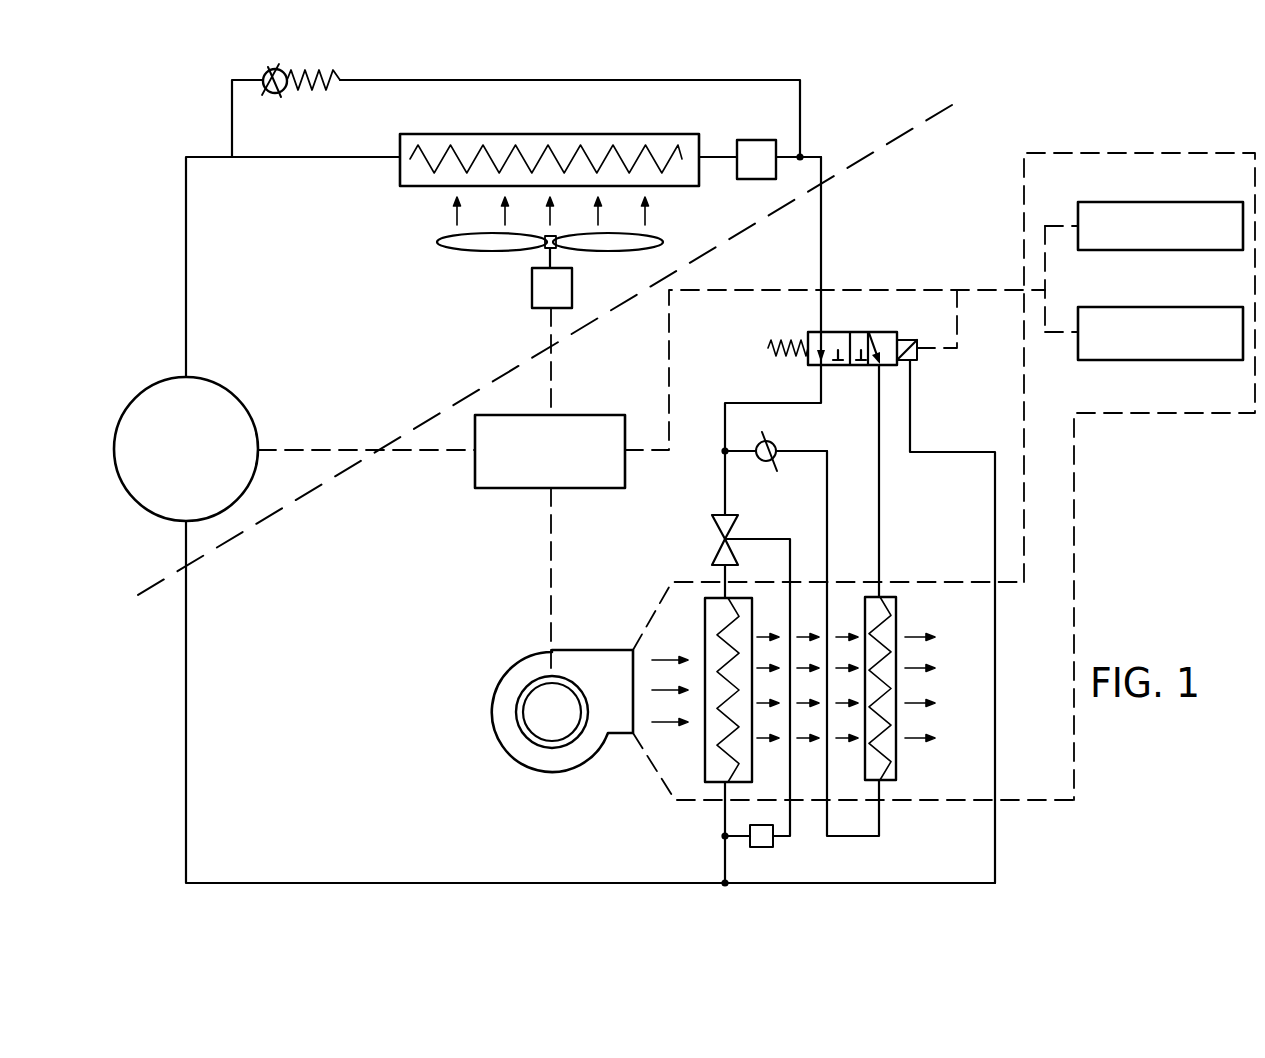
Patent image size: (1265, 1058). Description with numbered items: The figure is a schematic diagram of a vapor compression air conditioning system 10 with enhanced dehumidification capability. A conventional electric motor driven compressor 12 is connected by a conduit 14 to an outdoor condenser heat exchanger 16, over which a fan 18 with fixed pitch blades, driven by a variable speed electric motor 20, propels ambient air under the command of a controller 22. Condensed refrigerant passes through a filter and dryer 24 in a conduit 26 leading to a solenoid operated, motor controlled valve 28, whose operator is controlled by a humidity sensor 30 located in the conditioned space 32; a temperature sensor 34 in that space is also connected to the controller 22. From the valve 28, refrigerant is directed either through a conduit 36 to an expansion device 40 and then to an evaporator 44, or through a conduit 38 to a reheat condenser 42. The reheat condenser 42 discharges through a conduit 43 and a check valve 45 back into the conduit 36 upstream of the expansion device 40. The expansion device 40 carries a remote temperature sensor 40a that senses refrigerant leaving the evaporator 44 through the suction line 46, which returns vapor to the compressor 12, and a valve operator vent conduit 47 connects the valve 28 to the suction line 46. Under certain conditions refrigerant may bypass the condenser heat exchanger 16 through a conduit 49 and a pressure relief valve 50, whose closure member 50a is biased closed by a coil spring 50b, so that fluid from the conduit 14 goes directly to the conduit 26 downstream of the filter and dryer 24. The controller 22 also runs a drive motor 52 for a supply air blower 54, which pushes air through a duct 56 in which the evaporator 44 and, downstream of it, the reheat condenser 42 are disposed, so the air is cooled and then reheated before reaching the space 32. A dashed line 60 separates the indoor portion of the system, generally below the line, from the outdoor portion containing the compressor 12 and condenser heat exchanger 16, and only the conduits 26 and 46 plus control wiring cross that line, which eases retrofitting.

The air conditioning system 10 is at (893, 78).
The compressor 12 is at (243, 402).
The conduit 14 is at (188, 199).
The condenser heat exchanger 16 is at (410, 187).
The fan 18 is at (463, 252).
The variable speed electric motor 20 is at (531, 288).
The controller 22 is at (584, 414).
The filter and dryer 24 is at (755, 180).
The conduit 26 is at (822, 240).
The motor controlled valve 28 is at (880, 331).
The humidity sensor 30 is at (1148, 361).
The conditioned space 32 is at (1029, 633).
The temperature sensor 34 is at (1135, 202).
The conduit 36 is at (808, 404).
The conduit 38 is at (878, 408).
The expansion device 40 is at (712, 535).
The remote temperature sensor 40a is at (762, 848).
The reheat condenser 42 is at (897, 617).
The conduit 43 is at (828, 534).
The evaporator 44 is at (705, 632).
The check valve 45 is at (779, 461).
The suction line 46 is at (492, 883).
The valve operator vent conduit 47 is at (900, 885).
The conduit 49 is at (598, 79).
The pressure relief valve 50 is at (266, 74).
The closure member 50a is at (270, 91).
The coil spring 50b is at (312, 93).
The drive motor 52 is at (522, 718).
The supply air blower 54 is at (506, 672).
The duct 56 is at (908, 803).
The dashed line 60 is at (318, 488).